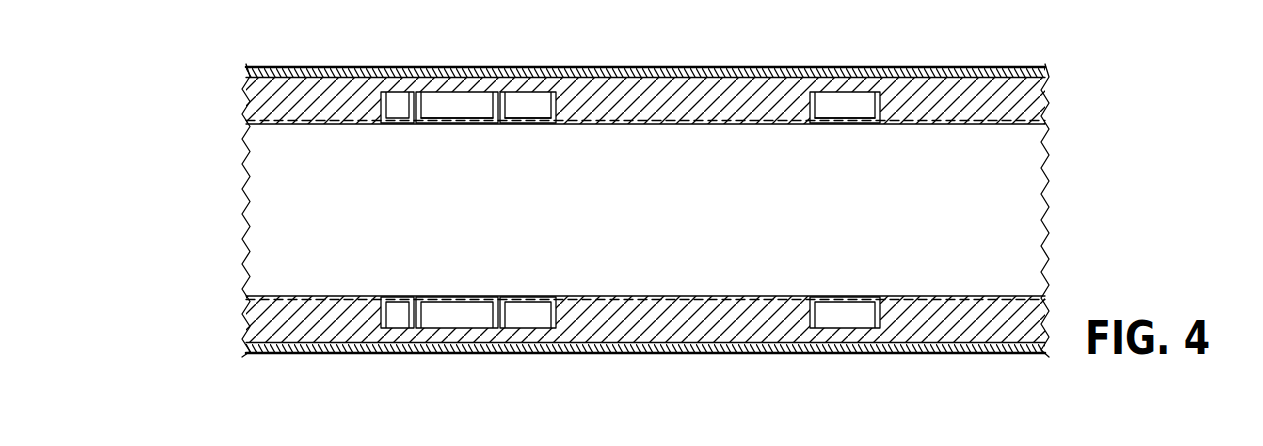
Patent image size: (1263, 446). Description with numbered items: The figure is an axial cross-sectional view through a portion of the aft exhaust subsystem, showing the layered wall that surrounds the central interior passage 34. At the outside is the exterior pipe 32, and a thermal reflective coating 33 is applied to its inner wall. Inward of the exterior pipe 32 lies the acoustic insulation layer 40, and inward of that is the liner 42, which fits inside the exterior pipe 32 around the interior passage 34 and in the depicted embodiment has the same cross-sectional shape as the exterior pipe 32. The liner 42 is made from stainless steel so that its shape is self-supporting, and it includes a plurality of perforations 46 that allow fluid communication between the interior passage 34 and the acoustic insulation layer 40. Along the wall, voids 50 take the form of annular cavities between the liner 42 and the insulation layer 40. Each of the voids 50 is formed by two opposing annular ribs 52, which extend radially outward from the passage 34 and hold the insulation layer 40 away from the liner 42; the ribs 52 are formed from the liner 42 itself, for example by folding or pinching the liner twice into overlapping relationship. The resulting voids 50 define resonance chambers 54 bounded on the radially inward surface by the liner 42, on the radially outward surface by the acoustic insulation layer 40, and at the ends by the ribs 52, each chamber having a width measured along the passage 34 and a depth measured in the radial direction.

The exterior pipe 32 is at (312, 66).
The thermal reflective coating 33 is at (796, 67).
The interior passage 34 is at (577, 179).
The acoustic insulation layer 40 is at (654, 105).
The liner 42 is at (986, 118).
The perforations 46 is at (527, 126).
The voids 50 is at (452, 100).
The annular ribs 52 is at (553, 92).
The resonance chambers 54 is at (858, 140).